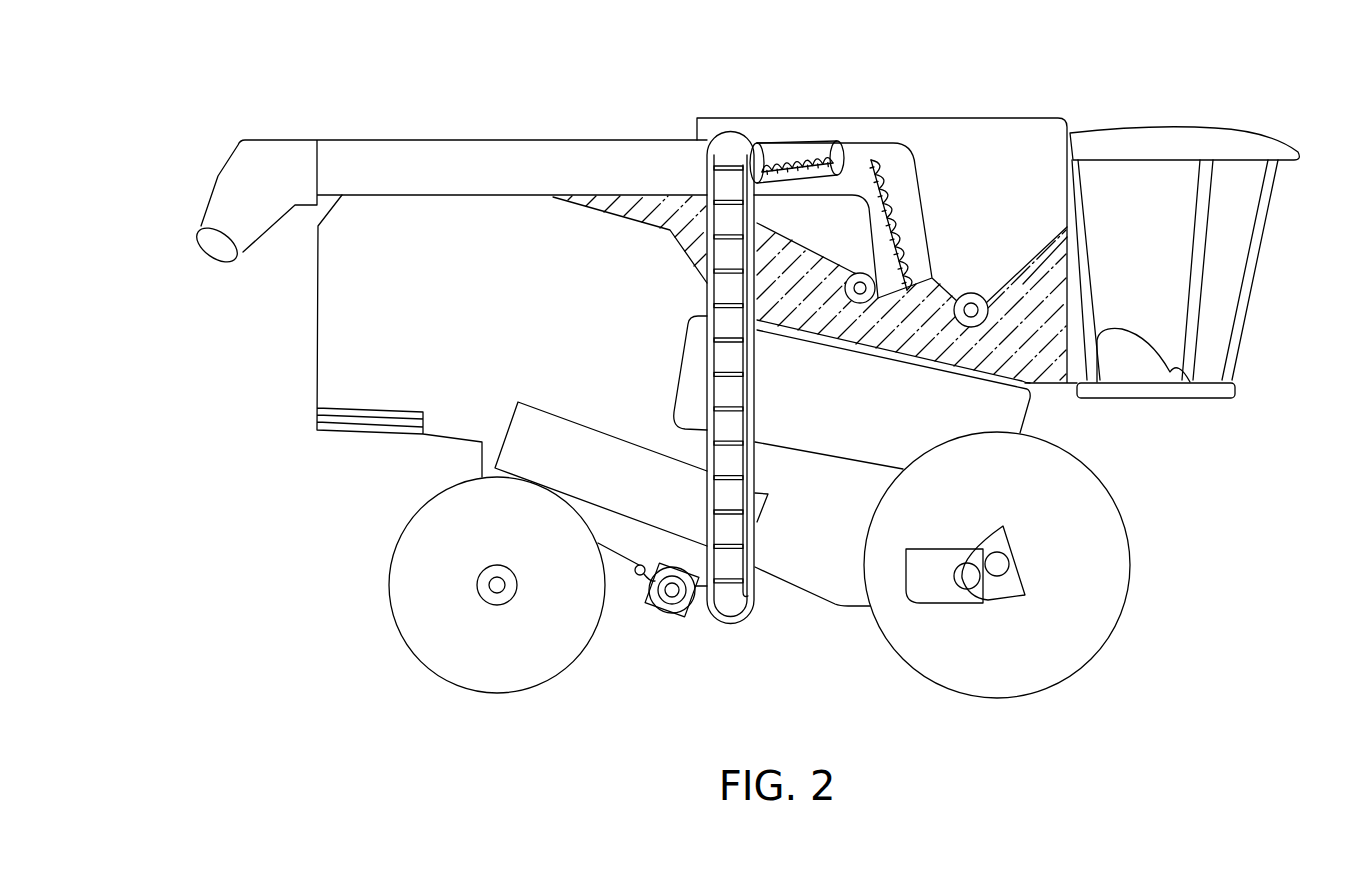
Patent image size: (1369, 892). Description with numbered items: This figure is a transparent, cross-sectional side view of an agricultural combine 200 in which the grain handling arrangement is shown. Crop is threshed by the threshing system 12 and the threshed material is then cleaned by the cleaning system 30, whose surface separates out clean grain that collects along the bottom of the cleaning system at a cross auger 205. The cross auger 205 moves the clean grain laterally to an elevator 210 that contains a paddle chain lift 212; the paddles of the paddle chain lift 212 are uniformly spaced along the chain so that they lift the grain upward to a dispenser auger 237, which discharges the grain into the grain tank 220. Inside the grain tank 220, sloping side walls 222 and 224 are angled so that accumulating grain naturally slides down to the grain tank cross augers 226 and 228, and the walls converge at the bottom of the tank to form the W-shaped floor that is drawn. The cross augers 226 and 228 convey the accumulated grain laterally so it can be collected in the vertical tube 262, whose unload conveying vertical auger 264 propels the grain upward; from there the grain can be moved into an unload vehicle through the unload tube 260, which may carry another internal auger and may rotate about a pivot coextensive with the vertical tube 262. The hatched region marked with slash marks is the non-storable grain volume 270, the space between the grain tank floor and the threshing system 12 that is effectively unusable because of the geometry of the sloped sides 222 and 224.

The threshing system 12 is at (840, 437).
The cleaning system 30 is at (525, 452).
The agricultural combine 200 is at (1117, 667).
The cross auger 205 is at (738, 625).
The elevator 210 is at (707, 183).
The paddle chain lift 212 is at (707, 162).
The grain tank 220 is at (1033, 167).
The sloping side wall 222 is at (812, 262).
The sloping side wall 224 is at (1027, 267).
The grain tank cross auger 226 is at (862, 303).
The grain tank cross auger 228 is at (978, 310).
The dispenser auger 237 is at (797, 152).
The unload tube 260 is at (373, 153).
The vertical tube 262 is at (913, 193).
The unload conveying vertical auger 264 is at (886, 143).
The non-storable grain volume 270 is at (1047, 345).